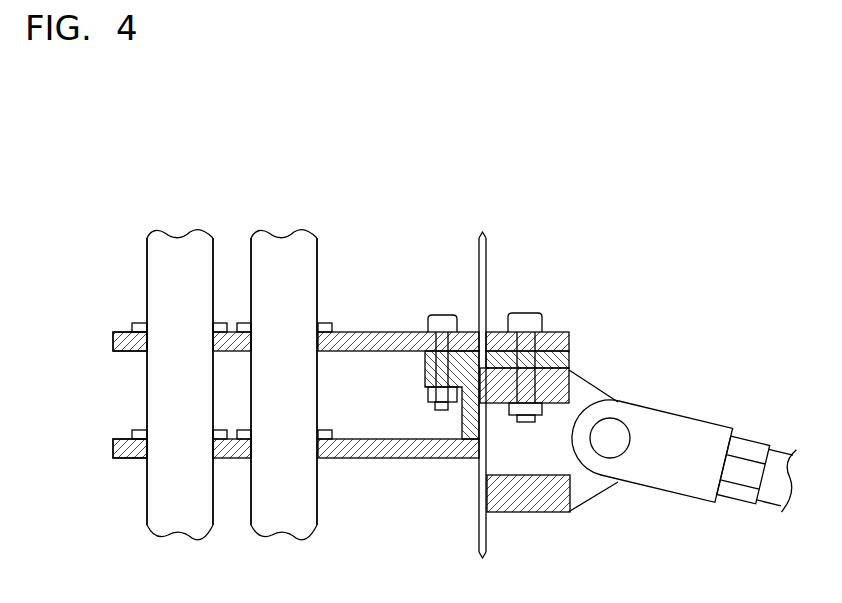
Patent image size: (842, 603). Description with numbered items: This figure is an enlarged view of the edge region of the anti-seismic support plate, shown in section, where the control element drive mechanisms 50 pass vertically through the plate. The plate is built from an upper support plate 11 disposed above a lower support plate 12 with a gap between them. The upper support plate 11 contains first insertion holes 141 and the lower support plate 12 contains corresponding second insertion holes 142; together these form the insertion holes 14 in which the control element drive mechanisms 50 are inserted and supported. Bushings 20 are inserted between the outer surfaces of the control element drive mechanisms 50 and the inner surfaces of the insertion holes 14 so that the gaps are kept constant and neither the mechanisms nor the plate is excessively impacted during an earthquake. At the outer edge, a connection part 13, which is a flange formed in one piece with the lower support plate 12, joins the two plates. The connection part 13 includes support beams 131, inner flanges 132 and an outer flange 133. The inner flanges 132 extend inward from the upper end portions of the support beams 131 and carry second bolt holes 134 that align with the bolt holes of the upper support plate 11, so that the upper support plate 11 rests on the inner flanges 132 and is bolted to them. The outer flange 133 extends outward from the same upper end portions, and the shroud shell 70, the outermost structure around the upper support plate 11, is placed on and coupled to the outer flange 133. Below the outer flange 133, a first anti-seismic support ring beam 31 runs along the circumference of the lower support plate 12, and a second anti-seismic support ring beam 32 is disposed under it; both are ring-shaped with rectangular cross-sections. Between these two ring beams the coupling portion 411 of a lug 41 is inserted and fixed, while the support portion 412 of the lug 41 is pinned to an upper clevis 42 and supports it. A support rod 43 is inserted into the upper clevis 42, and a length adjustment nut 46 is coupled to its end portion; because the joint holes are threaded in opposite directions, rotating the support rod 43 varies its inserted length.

The upper support plate 11 is at (389, 330).
The lower support plate 12 is at (392, 460).
The connection part 13 is at (640, 245).
The support beam 131 is at (478, 412).
The inner flange 132 is at (520, 313).
The outer flange 133 is at (566, 346).
The second bolt hole 134 is at (433, 315).
The insertion hole 14 is at (48, 365).
The first insertion hole 141 is at (150, 352).
The second insertion hole 142 is at (150, 460).
The bushing 20 is at (137, 324).
The first anti-seismic support ring beam 31 is at (560, 377).
The second anti-seismic support ring beam 32 is at (517, 497).
The lug 41 is at (562, 482).
The coupling portion 411 is at (530, 462).
The support portion 412 is at (585, 488).
The upper clevis 42 is at (693, 428).
The support rod 43 is at (776, 490).
The length adjustment nut 46 is at (740, 456).
The control element drive mechanism 50 is at (163, 233).
The shroud shell 70 is at (488, 248).